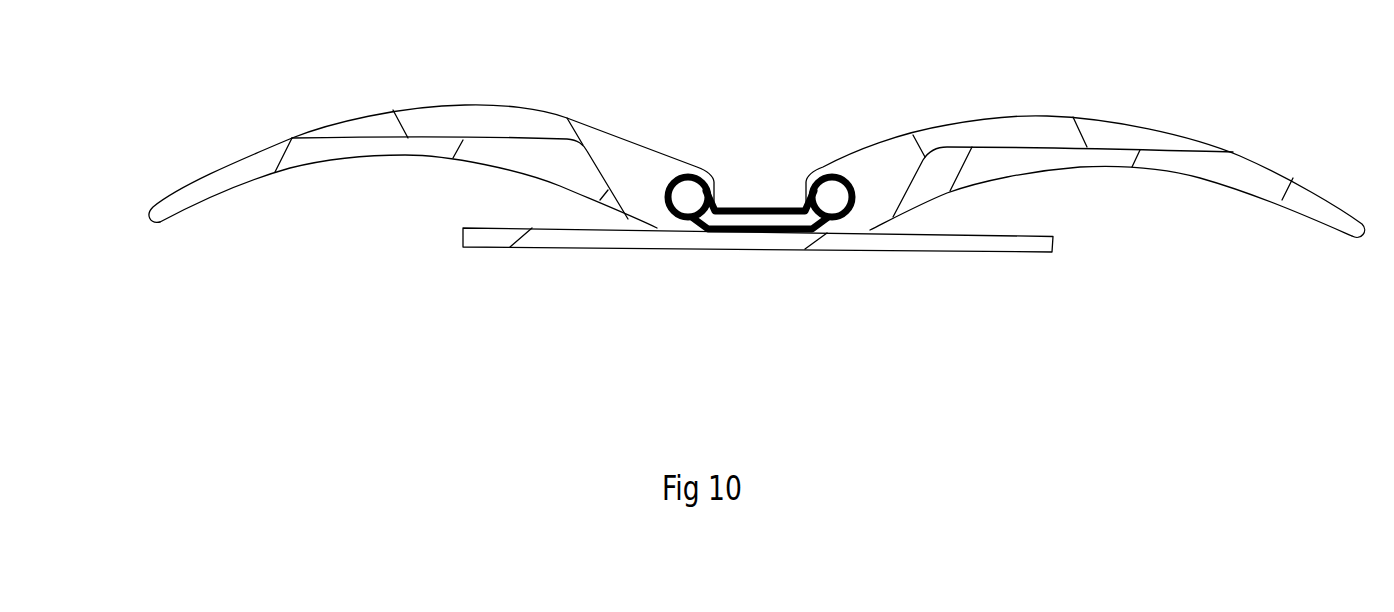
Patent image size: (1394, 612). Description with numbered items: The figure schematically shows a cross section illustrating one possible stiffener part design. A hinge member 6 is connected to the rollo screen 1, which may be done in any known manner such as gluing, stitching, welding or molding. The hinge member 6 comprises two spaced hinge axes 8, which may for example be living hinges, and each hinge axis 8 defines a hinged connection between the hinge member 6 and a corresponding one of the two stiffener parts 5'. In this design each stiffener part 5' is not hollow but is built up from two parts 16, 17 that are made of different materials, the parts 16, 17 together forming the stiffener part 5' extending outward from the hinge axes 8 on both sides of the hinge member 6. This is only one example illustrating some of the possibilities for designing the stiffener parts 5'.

The rollo screen 1 is at (565, 244).
The stiffener part 5' is at (757, 135).
The hinge member 6 is at (756, 198).
The hinge axis 8 is at (688, 185).
The part 16 is at (497, 118).
The part 17 is at (380, 160).